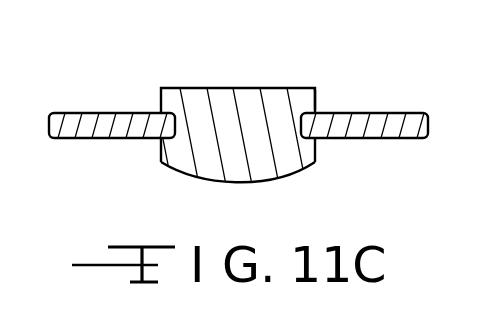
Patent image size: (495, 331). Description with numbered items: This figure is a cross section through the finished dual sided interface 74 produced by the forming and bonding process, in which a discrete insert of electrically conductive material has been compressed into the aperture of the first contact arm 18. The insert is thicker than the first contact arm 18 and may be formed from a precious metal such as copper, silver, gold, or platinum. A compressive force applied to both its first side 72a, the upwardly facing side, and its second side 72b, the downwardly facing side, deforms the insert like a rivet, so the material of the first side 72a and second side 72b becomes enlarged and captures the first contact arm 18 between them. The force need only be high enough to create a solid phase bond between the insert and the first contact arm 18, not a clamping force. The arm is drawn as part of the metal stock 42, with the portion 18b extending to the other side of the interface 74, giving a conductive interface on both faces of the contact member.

The first contact arm 18 is at (105, 123).
The second plate portion 18b is at (383, 112).
The metal stock 42 is at (410, 122).
The first side 72a is at (235, 88).
The second side 72b is at (228, 184).
The dual sided interface 74 is at (324, 95).